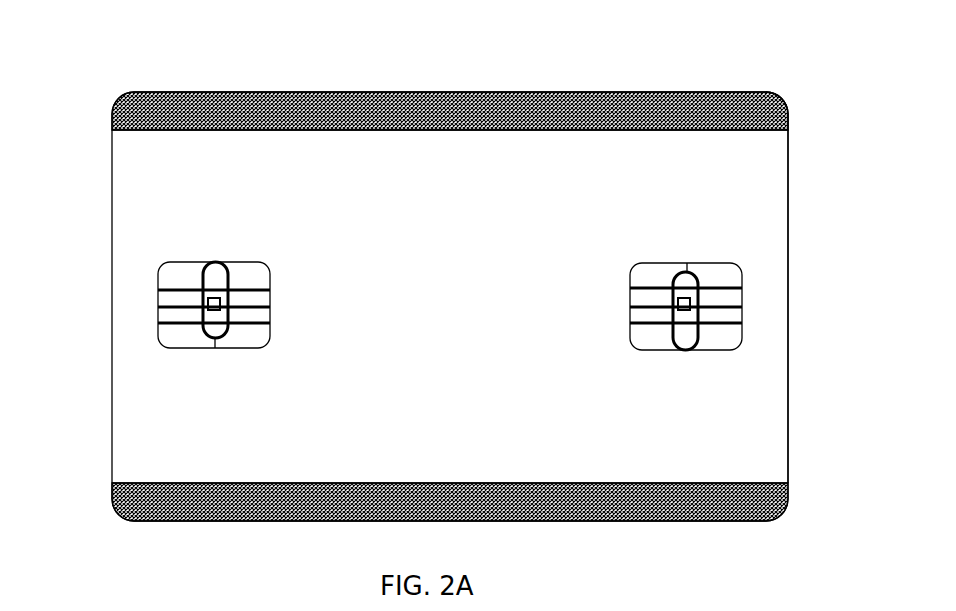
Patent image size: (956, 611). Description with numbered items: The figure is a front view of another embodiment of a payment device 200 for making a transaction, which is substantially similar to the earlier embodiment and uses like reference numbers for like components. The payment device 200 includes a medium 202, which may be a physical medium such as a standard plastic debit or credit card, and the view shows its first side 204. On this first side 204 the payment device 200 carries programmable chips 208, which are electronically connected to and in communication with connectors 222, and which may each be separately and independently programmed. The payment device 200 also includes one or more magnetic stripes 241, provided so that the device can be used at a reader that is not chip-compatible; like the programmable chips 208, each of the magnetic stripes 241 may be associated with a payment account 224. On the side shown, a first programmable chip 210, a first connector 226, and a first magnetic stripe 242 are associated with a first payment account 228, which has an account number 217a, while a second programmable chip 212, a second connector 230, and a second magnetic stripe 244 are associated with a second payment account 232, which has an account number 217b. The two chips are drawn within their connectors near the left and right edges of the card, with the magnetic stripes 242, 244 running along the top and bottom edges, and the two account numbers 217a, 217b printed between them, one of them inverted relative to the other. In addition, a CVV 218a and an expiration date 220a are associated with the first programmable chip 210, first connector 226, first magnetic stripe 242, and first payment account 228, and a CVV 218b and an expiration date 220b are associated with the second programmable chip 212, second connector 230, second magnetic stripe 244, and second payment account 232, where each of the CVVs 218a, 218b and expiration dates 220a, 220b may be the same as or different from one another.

The payment device 200 is at (735, 71).
The medium 202 is at (768, 132).
The first side 204 is at (728, 170).
The programmable chips 208 is at (216, 293).
The first programmable chip 210 is at (208, 300).
The second programmable chip 212 is at (690, 307).
The account number 217a is at (562, 158).
The account number 217b is at (690, 456).
The CVV 218a is at (147, 198).
The CVV 218b is at (757, 405).
The expiration date 220a is at (305, 197).
The expiration date 220b is at (593, 406).
The connectors 222 is at (215, 352).
The payment account 224 is at (525, 178).
The first connector 226 is at (248, 353).
The first payment account 228 is at (210, 158).
The second connector 230 is at (660, 338).
The second payment account 232 is at (334, 452).
The magnetic stripes 241 is at (525, 87).
The first magnetic stripe 242 is at (313, 92).
The second magnetic stripe 244 is at (155, 522).